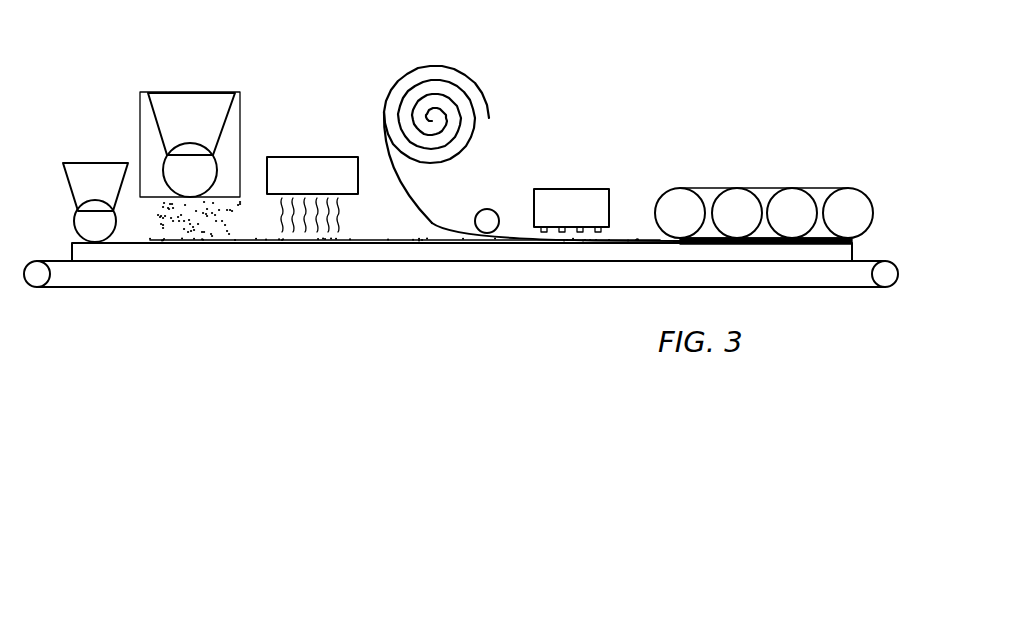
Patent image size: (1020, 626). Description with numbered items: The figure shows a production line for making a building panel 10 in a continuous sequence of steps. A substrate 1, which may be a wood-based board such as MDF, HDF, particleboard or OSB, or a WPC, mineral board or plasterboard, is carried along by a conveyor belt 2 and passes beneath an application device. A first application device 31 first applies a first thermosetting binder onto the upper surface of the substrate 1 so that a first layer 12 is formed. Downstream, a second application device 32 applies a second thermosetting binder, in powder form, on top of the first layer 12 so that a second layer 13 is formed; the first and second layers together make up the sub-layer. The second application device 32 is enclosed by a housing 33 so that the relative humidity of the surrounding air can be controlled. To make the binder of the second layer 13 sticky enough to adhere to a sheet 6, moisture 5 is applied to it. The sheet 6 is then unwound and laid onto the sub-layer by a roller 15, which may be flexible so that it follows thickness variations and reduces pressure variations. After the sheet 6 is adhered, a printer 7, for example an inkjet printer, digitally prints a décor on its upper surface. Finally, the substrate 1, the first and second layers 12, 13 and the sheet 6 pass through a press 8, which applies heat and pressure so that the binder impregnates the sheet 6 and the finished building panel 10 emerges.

The substrate 1 is at (125, 252).
The conveyor belt 2 is at (313, 286).
The moisture 5 is at (314, 143).
The sheet 6 is at (432, 223).
The printer 7 is at (586, 183).
The press 8 is at (749, 178).
The building panel 10 is at (814, 254).
The first layer 12 is at (195, 245).
The second layer 13 is at (275, 243).
The roller 15 is at (497, 209).
The first application device 31 is at (100, 153).
The second application device 32 is at (202, 90).
The housing 33 is at (140, 117).